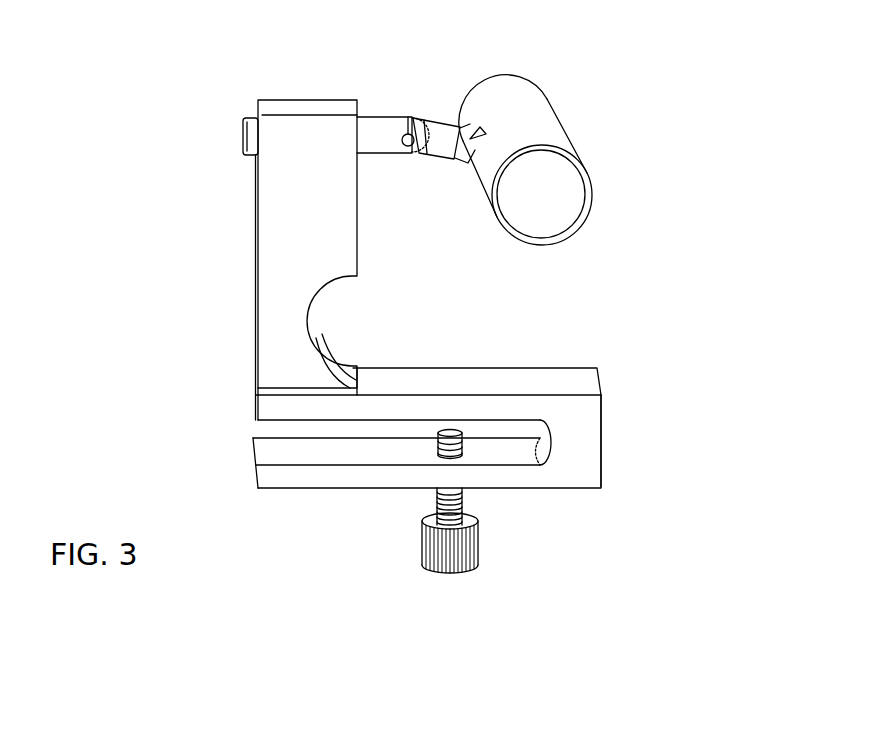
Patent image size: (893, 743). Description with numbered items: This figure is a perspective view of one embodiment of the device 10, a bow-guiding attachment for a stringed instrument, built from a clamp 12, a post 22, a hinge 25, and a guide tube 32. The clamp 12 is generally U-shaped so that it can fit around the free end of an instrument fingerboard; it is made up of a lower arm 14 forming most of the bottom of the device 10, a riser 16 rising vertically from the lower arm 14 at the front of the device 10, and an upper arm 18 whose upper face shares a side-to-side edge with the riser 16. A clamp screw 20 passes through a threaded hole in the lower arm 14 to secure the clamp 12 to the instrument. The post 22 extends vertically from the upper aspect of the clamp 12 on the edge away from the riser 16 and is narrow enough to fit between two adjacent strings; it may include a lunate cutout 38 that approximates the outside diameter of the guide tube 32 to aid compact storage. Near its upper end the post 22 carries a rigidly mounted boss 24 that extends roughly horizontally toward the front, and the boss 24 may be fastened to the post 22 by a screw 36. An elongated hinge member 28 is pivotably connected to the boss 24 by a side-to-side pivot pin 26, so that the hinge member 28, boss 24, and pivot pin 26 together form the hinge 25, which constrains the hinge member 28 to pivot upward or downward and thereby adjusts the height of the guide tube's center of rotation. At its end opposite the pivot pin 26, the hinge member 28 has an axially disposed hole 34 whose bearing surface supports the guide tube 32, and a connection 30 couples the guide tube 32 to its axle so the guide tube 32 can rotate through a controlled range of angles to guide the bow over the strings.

The device 10 is at (136, 172).
The clamp 12 is at (620, 441).
The lower arm 14 is at (497, 477).
The riser 16 is at (578, 460).
The upper arm 18 is at (460, 382).
The clamp screw 20 is at (433, 547).
The post 22 is at (275, 262).
The boss 24 is at (382, 137).
The hinge 25 is at (420, 86).
The pivot pin 26 is at (410, 147).
The hinge member 28 is at (443, 155).
The connection 30 is at (458, 147).
The guide tube 32 is at (543, 113).
The hole 34 is at (460, 143).
The screw 36 is at (257, 123).
The lunate cutout 38 is at (332, 366).